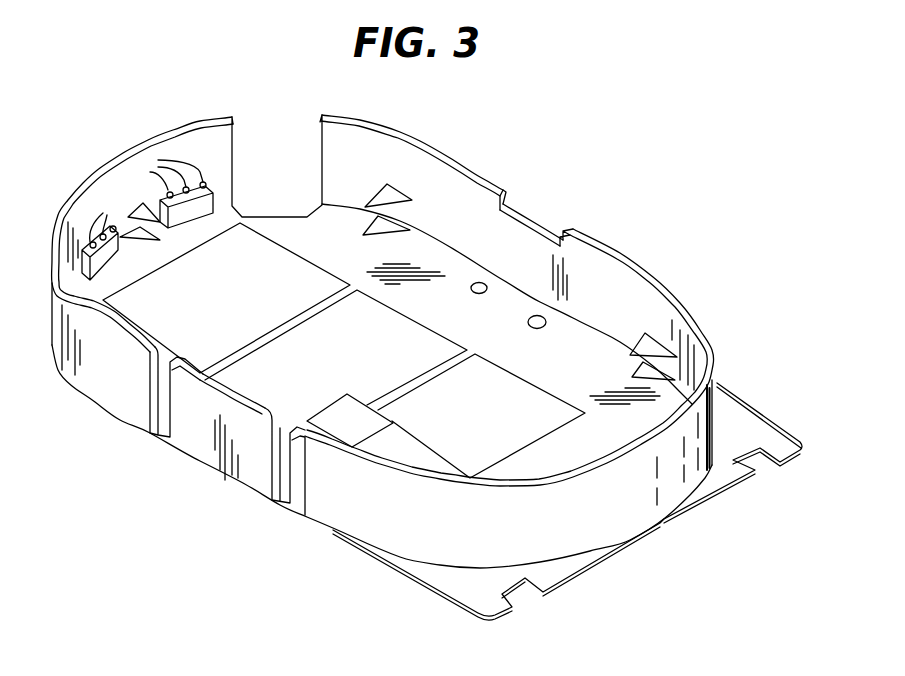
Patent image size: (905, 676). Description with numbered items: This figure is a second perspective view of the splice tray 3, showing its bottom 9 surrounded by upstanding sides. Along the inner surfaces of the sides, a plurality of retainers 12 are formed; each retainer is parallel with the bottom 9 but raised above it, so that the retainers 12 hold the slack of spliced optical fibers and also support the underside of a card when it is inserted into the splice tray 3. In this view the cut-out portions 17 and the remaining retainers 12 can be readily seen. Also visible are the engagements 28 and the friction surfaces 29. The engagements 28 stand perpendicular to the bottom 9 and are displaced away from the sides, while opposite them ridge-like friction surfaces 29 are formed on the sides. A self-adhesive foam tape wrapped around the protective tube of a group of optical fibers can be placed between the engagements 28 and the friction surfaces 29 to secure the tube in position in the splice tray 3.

The splice tray 3 is at (122, 78).
The bottom 9 is at (506, 286).
The retainers 12 is at (385, 197).
The cut-out portions 17 is at (774, 471).
The engagements 28 is at (192, 213).
The friction surfaces 29 is at (144, 196).